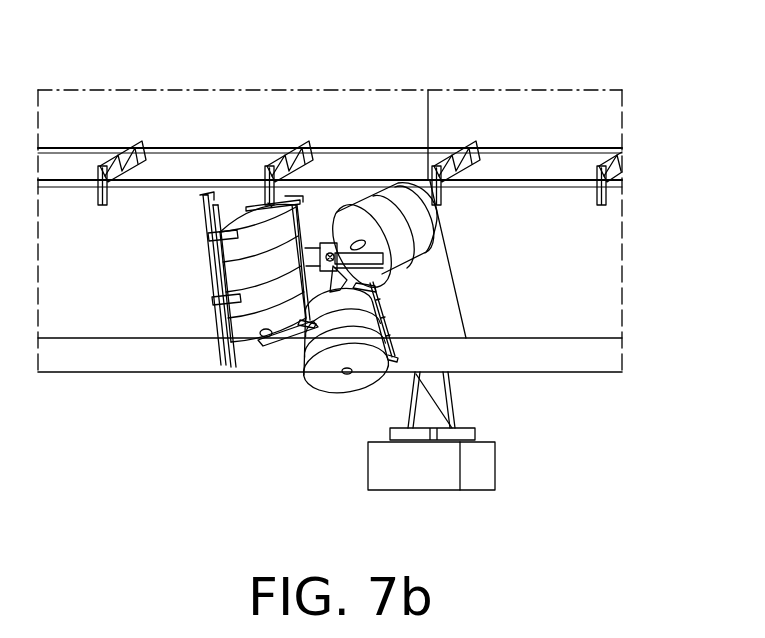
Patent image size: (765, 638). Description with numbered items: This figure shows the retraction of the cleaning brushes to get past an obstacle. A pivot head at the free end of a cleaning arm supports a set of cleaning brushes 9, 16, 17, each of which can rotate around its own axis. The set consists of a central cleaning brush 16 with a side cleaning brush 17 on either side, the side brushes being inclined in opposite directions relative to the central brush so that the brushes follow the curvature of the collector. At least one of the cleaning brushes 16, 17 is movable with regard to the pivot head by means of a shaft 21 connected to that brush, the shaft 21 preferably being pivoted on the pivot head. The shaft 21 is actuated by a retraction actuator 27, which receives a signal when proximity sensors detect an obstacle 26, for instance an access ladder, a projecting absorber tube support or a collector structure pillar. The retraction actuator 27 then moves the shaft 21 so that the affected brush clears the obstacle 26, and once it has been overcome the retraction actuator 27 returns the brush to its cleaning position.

The cleaning brush 9 is at (285, 373).
The central cleaning brush 16 is at (240, 222).
The side cleaning brush 17 is at (398, 190).
The shaft 21 is at (356, 289).
The obstacle 26 is at (287, 150).
The retraction actuator 27 is at (352, 257).